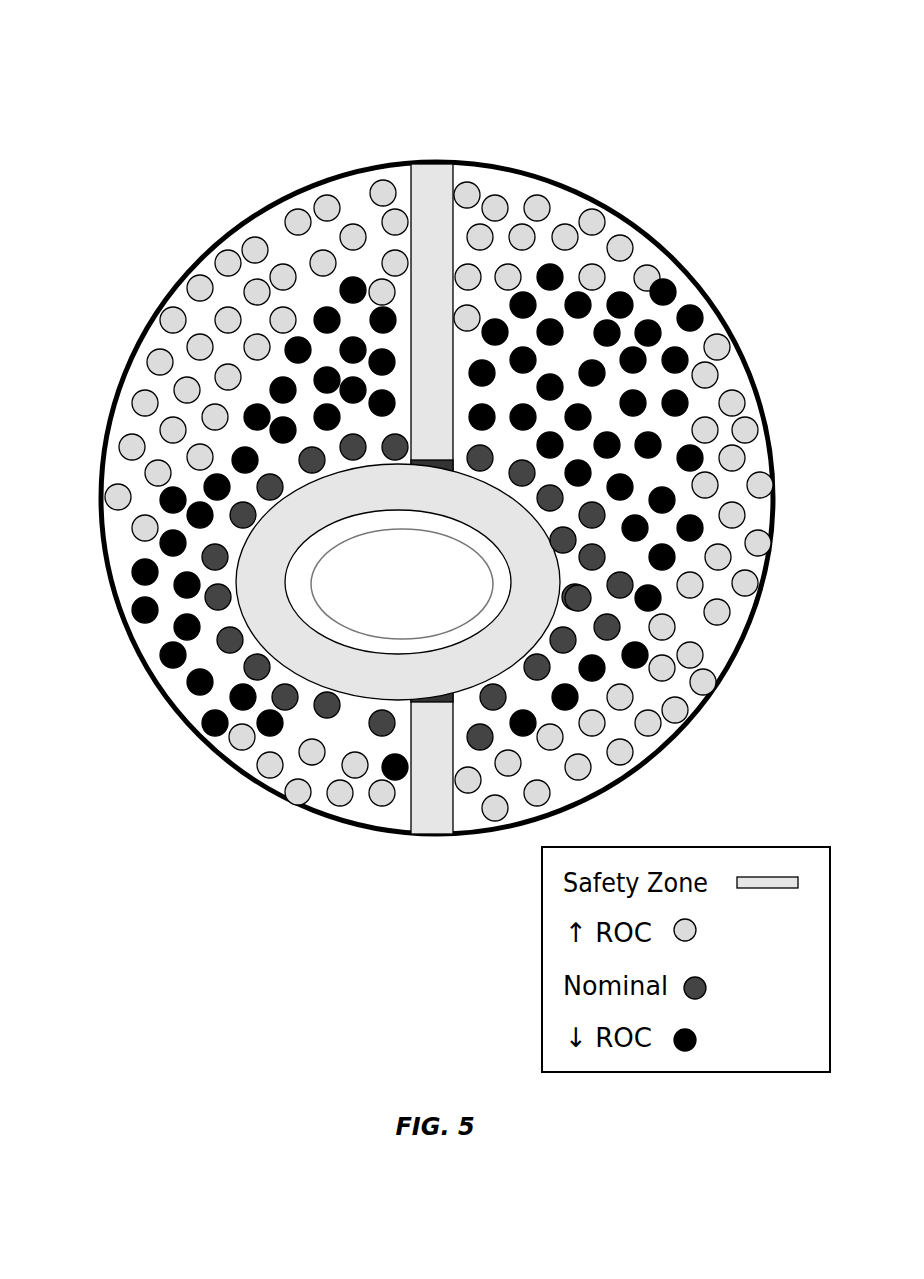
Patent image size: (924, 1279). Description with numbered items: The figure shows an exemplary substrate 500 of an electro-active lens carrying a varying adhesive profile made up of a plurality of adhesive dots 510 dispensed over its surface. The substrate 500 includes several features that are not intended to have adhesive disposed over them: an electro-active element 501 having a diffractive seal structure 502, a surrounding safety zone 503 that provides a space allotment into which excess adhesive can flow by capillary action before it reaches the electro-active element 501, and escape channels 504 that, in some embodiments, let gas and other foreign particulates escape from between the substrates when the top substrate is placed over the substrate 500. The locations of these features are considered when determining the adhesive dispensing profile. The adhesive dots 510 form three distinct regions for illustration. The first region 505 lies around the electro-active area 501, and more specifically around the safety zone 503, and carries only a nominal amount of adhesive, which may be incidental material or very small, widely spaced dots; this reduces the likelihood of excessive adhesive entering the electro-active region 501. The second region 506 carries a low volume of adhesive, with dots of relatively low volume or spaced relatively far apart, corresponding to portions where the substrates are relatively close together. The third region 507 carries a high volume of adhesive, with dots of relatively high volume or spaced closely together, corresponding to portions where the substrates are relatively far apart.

The substrate 500 is at (623, 103).
The electro-active element 501 is at (393, 580).
The diffractive seal structure 502 is at (320, 553).
The safety zone 503 is at (263, 550).
The escape channels 504 is at (430, 210).
The first region 505 is at (572, 504).
The second region 506 is at (577, 342).
The third region 507 is at (287, 260).
The adhesive dots 510 is at (627, 290).